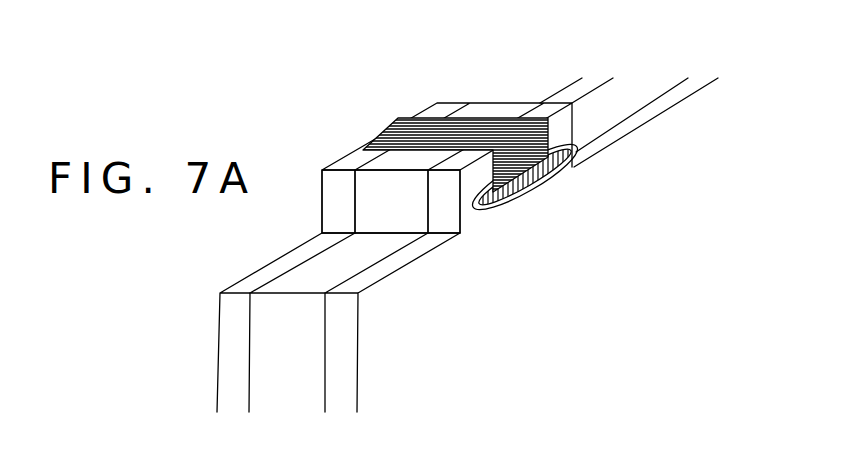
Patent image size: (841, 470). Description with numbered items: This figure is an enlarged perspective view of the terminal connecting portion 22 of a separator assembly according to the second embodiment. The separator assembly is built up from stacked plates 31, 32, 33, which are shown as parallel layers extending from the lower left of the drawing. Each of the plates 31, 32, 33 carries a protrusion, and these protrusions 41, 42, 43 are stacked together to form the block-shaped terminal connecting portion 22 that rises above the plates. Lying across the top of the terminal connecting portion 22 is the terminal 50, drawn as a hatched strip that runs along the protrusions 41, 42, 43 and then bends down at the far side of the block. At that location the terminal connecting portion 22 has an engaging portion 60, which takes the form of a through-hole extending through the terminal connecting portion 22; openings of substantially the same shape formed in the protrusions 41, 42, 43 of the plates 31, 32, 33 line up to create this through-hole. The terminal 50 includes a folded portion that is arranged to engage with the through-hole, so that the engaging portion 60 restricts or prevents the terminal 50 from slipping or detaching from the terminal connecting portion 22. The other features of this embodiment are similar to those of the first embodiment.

The terminal connecting portion 22 is at (321, 169).
The plate 31 is at (340, 400).
The plate 32 is at (285, 400).
The plate 33 is at (233, 400).
The protrusion 41 is at (443, 208).
The protrusion 42 is at (380, 180).
The protrusion 43 is at (338, 208).
The terminal 50 is at (386, 138).
The engaging portion 60 is at (542, 192).